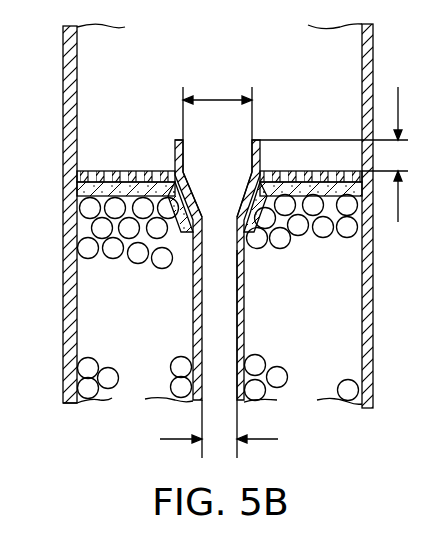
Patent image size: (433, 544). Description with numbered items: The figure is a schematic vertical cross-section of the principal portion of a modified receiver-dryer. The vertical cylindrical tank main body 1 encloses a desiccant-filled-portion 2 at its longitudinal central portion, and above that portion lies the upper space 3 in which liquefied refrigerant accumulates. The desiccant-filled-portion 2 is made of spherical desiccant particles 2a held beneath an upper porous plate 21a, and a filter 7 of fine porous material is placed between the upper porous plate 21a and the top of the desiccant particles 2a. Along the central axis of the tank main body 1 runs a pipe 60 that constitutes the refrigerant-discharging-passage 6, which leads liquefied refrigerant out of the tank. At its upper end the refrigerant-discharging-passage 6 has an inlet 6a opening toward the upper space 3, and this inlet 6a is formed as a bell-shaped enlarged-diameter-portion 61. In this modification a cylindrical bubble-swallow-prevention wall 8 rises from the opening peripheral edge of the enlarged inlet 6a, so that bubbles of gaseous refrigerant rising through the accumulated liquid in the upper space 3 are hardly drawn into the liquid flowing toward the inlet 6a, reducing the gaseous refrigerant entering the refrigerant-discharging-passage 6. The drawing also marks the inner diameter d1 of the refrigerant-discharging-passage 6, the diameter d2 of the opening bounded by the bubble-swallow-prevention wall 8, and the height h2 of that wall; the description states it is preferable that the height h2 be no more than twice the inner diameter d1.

The tank main body 1 is at (63, 90).
The desiccant-filled-portion 2 is at (302, 307).
The spherical desiccant particles 2a is at (157, 268).
The upper space 3 is at (176, 70).
The refrigerant-discharging-passage 6 is at (205, 312).
The inlet 6a is at (216, 167).
The filter 7 is at (82, 192).
The bubble-swallow-prevention wall 8 is at (172, 148).
The upper porous plate 21a is at (103, 171).
The pipe 60 is at (245, 333).
The enlarged-diameter-portion 61 is at (222, 198).
The inner diameter of the refrigerant-discharging-passage d1 is at (200, 429).
The upper tube inner diameter d2 is at (217, 103).
The height of the bubble-swallow-prevention wall h2 is at (402, 176).